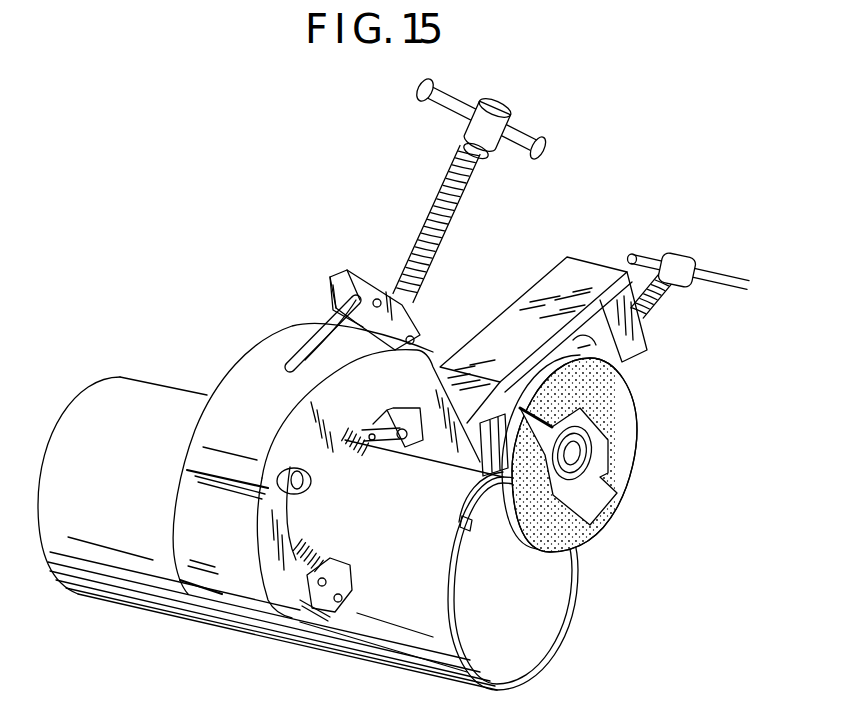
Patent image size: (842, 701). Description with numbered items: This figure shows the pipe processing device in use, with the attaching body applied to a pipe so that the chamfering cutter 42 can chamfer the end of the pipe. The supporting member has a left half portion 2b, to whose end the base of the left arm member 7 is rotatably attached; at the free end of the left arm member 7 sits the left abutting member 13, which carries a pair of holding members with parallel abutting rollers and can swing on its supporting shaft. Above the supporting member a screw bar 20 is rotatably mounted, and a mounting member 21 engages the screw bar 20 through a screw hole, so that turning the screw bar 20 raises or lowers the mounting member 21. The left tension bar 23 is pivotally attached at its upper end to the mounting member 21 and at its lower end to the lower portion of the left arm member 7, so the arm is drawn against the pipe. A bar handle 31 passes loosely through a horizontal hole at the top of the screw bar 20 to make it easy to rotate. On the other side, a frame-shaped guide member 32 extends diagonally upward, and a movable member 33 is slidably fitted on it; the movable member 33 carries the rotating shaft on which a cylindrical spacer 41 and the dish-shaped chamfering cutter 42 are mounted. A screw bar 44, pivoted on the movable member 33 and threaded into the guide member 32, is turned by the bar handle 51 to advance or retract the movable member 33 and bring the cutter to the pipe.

The left arm member 7 is at (225, 583).
The left half portion 2b is at (243, 357).
The left abutting member 13 is at (350, 600).
The screw bar 20 is at (433, 197).
The mounting member 21 is at (347, 278).
The left tension bar 23 is at (332, 317).
The bar handle 31 is at (520, 132).
The guide member 32 is at (544, 277).
The movable member 33 is at (530, 357).
The cylindrical spacer 41 is at (597, 513).
The chamfering cutter 42 is at (473, 463).
The screw bar 44 is at (653, 310).
The bar handle 51 is at (710, 273).